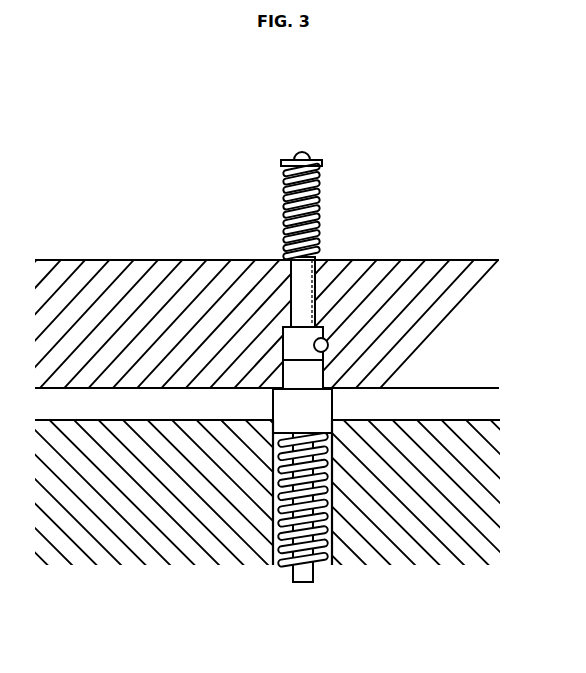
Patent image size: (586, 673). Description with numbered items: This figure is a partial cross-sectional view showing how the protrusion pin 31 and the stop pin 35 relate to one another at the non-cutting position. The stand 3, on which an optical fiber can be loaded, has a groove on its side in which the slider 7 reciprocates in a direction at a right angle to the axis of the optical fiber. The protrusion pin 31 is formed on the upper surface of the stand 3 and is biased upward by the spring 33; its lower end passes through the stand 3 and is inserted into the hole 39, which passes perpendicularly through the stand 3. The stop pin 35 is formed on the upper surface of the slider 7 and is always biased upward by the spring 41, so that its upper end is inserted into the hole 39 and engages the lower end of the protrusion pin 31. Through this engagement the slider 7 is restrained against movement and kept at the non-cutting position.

The stand 3 is at (132, 260).
The slider 7 is at (486, 462).
The protrusion pin 31 is at (305, 153).
The spring 33 is at (320, 204).
The stop pin 35 is at (297, 372).
The hole 39 is at (327, 338).
The spring 41 is at (283, 556).